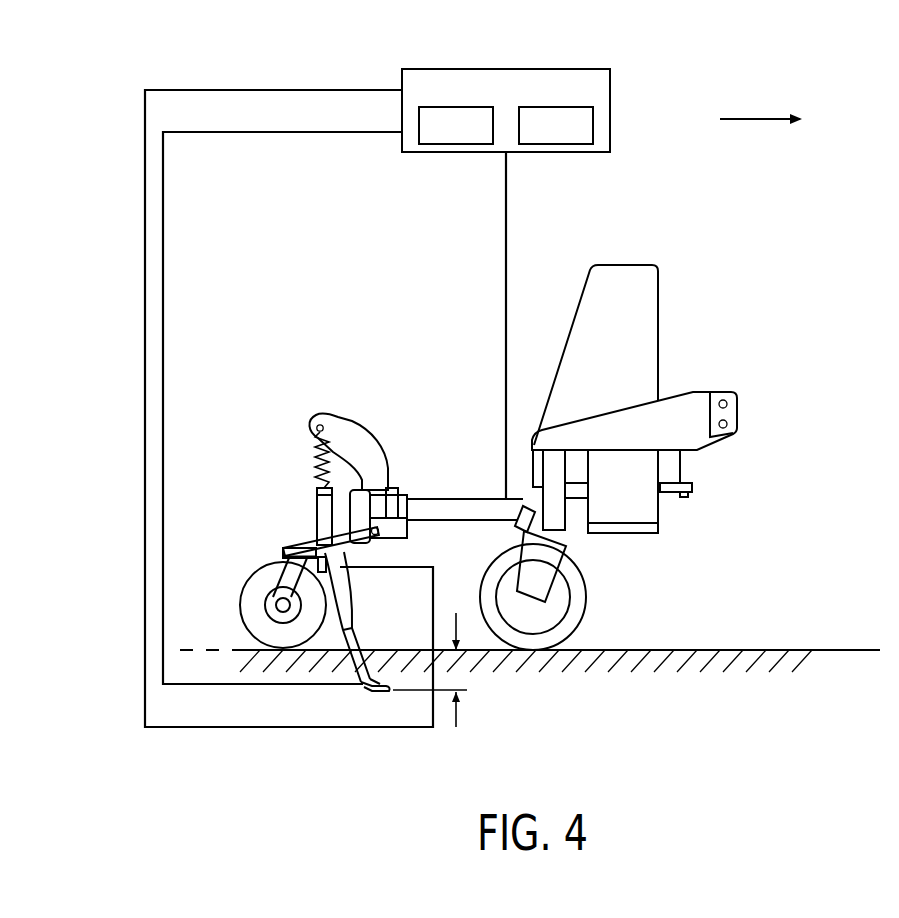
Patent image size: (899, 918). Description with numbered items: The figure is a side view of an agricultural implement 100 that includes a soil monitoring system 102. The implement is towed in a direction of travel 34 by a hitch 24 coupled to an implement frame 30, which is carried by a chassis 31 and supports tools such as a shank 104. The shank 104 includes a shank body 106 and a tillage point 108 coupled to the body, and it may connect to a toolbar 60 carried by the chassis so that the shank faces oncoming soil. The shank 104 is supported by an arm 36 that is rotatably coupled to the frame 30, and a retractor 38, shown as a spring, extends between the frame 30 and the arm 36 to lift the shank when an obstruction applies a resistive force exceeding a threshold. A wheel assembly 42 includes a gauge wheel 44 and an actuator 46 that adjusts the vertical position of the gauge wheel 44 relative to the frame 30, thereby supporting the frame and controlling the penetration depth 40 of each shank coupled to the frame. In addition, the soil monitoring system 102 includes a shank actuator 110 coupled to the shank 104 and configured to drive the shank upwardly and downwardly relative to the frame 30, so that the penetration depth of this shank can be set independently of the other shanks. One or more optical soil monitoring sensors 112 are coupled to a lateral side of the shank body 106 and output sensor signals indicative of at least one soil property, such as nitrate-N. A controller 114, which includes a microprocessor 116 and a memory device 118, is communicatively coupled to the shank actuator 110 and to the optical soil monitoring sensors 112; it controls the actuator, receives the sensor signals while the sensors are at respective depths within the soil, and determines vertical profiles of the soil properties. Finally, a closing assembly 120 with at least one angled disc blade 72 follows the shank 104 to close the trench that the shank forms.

The soil monitoring system 102 is at (337, 42).
The controller 114 is at (506, 69).
The microprocessor 116 is at (457, 144).
The memory device 118 is at (555, 145).
The direction of travel 34 is at (755, 118).
The agricultural implement 100 is at (675, 213).
The hitch 24 is at (717, 417).
The chassis 31 is at (620, 409).
The implement frame 30 is at (352, 441).
The retractor 38 is at (318, 463).
The toolbar 60 is at (398, 508).
The arm 36 is at (362, 538).
The actuator 46 is at (518, 526).
The gauge wheel 44 is at (585, 574).
The wheel assembly 42 is at (588, 626).
The angled disc blade 72 is at (243, 603).
The shank actuator 110 is at (314, 550).
The closing assembly 120 is at (228, 583).
The shank body 106 is at (342, 592).
The shank 104 is at (366, 607).
The optical soil monitoring sensor 112 is at (364, 694).
The tillage point 108 is at (388, 694).
The penetration depth 40 is at (457, 712).